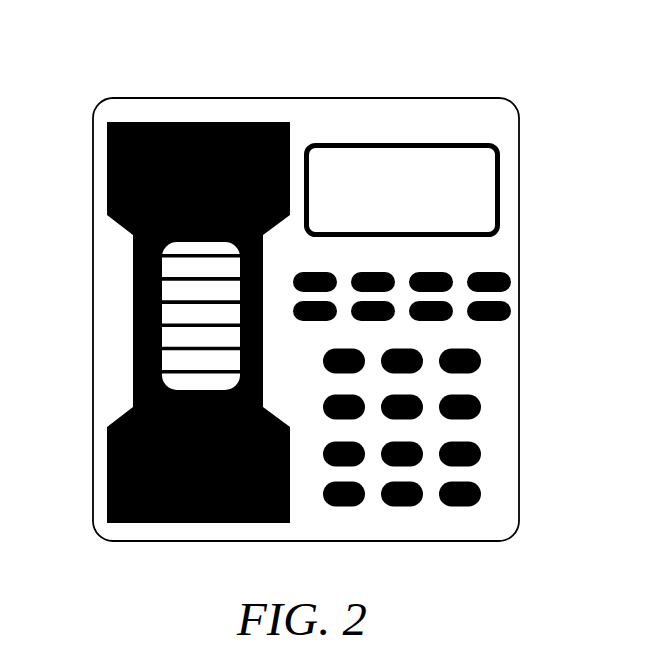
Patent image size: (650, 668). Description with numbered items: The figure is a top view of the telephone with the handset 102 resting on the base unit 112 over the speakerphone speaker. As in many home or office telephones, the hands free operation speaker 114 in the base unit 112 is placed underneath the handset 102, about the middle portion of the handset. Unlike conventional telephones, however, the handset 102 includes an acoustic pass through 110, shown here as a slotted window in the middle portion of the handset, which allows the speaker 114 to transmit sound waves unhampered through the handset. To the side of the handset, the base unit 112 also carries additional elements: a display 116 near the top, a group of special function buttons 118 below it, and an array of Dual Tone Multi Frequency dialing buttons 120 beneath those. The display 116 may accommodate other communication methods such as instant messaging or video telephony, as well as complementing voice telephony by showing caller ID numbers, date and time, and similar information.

The handset 102 is at (142, 113).
The acoustic pass through 110 is at (158, 322).
The base unit 112 is at (278, 292).
The hands free operation speaker 114 is at (188, 295).
The display 116 is at (482, 133).
The special function buttons 118 is at (498, 258).
The Dual Tone Multi Frequency (DTMF) dialing buttons 120 is at (497, 427).